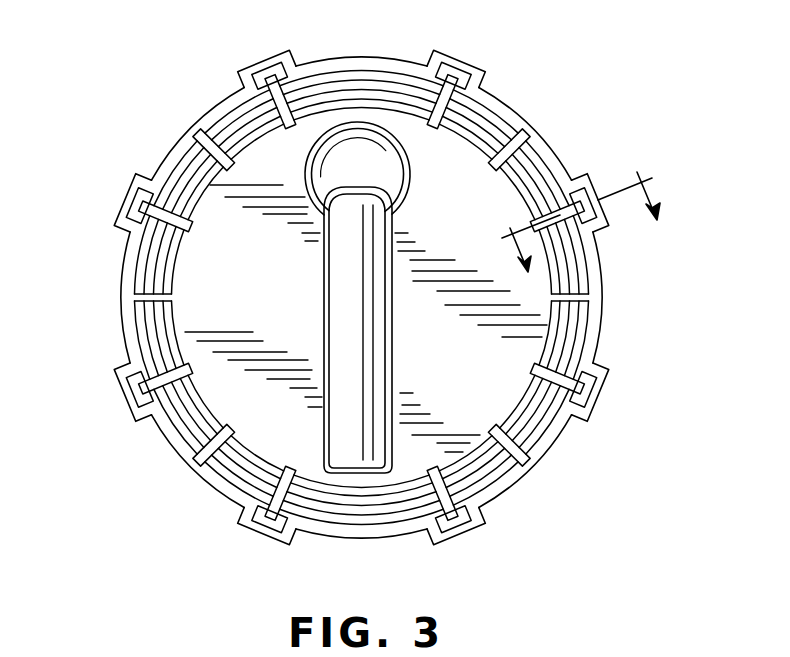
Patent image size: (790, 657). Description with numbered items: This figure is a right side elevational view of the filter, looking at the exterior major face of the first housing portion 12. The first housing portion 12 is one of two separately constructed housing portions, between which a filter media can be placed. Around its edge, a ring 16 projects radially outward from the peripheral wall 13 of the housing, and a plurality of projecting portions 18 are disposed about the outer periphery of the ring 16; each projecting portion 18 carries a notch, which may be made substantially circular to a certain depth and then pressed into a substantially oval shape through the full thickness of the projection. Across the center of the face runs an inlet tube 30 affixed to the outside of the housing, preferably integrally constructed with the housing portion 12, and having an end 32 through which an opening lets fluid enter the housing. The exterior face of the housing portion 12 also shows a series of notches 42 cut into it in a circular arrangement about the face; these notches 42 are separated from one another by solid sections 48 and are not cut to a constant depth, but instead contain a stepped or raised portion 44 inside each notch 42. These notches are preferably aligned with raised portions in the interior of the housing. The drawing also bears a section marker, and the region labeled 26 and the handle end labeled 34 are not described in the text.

The first housing portion 12 is at (187, 256).
The peripheral wall 13 is at (571, 208).
The ring 16 is at (600, 311).
The projecting portion 18 is at (465, 63).
The lug recess 26 is at (443, 67).
The inlet tube 30 is at (383, 292).
The end 32 is at (338, 133).
The handle end 34 is at (351, 472).
The notch 42 is at (517, 147).
The raised portion 44 is at (540, 183).
The solid section 48 is at (478, 79).